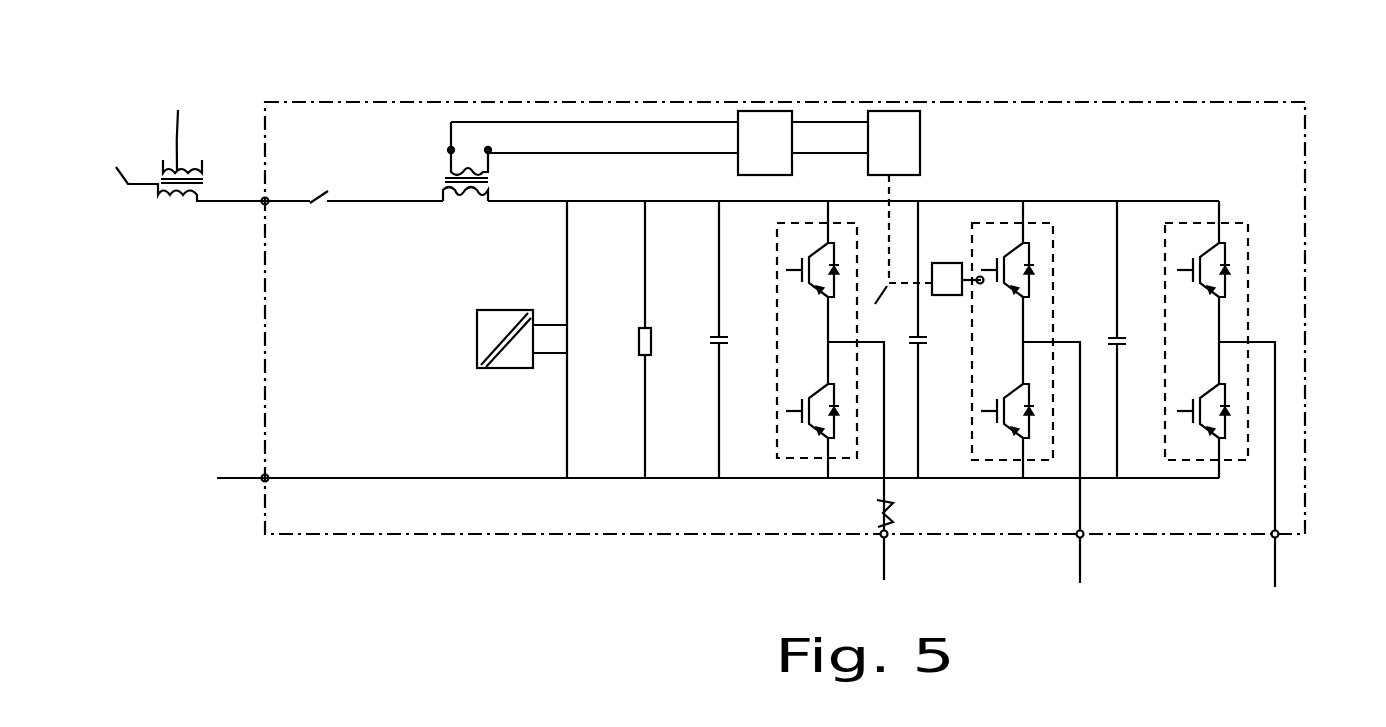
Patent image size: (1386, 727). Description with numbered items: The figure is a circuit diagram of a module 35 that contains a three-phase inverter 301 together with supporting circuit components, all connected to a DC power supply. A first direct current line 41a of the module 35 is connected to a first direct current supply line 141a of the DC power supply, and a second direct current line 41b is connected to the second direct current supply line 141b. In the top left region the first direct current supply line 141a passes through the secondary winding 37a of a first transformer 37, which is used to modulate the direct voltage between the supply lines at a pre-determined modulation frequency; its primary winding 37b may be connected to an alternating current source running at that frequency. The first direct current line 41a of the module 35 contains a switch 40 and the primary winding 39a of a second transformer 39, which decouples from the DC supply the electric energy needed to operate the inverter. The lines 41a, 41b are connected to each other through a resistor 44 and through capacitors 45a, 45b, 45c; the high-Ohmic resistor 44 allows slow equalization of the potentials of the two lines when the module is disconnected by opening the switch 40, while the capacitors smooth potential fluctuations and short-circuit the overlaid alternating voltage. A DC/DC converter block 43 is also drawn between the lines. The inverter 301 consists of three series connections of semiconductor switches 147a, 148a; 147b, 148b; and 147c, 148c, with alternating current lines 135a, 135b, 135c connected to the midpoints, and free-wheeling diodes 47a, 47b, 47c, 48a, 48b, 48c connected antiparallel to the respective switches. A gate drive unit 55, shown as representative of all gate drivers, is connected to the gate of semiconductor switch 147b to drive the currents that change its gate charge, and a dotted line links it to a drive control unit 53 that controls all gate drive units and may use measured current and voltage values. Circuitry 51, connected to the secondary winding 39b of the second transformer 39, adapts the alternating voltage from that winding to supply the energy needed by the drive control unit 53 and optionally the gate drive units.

The module 35 is at (347, 534).
The first transformer 37 is at (178, 212).
The secondary winding 37a is at (167, 170).
The primary winding 37b is at (190, 117).
The second transformer 39 is at (418, 181).
The primary winding 39a is at (457, 208).
The secondary winding 39b is at (462, 125).
The switch 40 is at (319, 208).
The first direct current line 41a is at (362, 204).
The second direct current line 41b is at (333, 478).
The DC/DC converter 43 is at (492, 370).
The resistor 44 is at (638, 350).
The capacitor 45a is at (717, 347).
The capacitor 45b is at (921, 341).
The capacitor 45c is at (1125, 336).
The free-wheeling diode 47a is at (845, 262).
The free-wheeling diode 47b is at (1042, 262).
The free-wheeling diode 47c is at (1228, 263).
The free-wheeling diode 48a is at (840, 411).
The free-wheeling diode 48b is at (1038, 412).
The free-wheeling diode 48c is at (1228, 411).
The circuitry 51 is at (762, 111).
The drive control unit 53 is at (892, 112).
The gate drive unit 55 is at (947, 263).
The alternating current line 135a is at (886, 560).
The alternating current line 135b is at (1082, 563).
The alternating current line 135c is at (1277, 563).
The first direct current supply line 141a is at (248, 203).
The second direct current supply line 141b is at (240, 480).
The semiconductor switch 147a is at (786, 270).
The semiconductor switch 147b is at (997, 270).
The semiconductor switch 147c is at (1178, 270).
The semiconductor switch 148a is at (786, 411).
The semiconductor switch 148b is at (981, 411).
The semiconductor switch 148c is at (1177, 411).
The three-phase inverter 301 is at (836, 512).